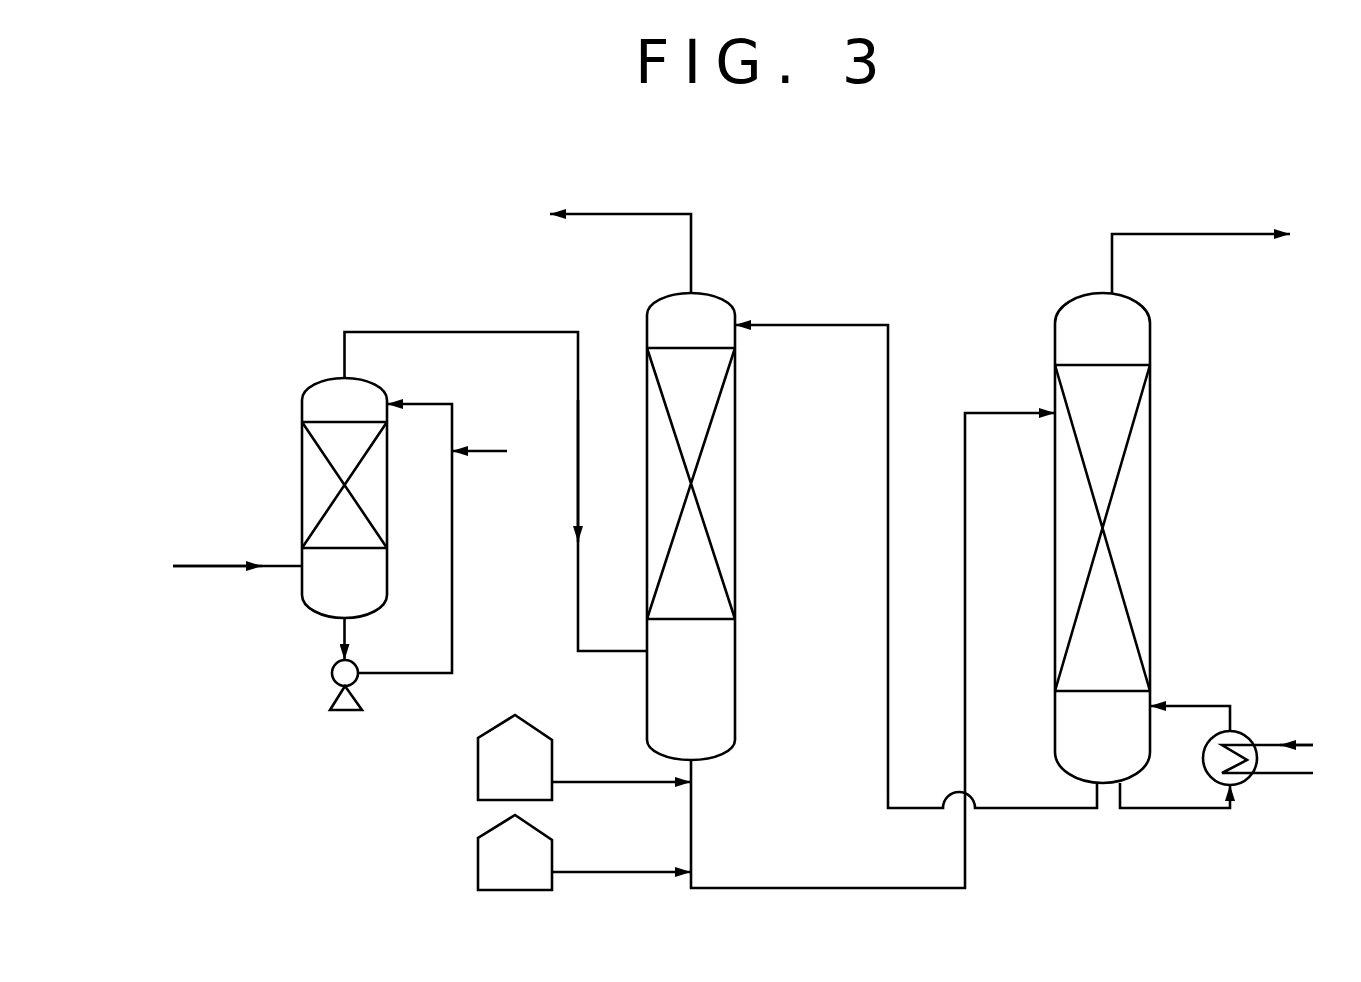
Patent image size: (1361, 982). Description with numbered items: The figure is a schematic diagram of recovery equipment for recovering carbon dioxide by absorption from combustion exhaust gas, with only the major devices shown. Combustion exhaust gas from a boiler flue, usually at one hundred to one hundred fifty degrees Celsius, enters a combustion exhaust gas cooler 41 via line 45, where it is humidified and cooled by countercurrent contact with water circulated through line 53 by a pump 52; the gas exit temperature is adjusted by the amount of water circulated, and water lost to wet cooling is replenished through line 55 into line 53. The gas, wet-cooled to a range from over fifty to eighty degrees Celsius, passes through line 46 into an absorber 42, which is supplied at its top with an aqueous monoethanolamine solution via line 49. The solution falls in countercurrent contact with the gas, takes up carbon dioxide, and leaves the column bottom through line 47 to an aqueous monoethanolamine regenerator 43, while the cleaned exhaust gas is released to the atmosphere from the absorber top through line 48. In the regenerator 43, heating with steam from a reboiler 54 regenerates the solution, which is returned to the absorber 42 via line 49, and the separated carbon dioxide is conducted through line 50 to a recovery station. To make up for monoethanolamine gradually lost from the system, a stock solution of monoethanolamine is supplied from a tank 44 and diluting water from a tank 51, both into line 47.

The combustion exhaust gas cooler 41 is at (300, 418).
The absorber 42 is at (736, 486).
The aqueous monoethanolamine regenerator 43 is at (1151, 355).
The tank 44 is at (547, 737).
The line 45 is at (190, 567).
The line 46 is at (463, 333).
The line 47 is at (818, 889).
The line 48 is at (636, 213).
The line 49 is at (889, 382).
The line 50 is at (1222, 233).
The tank 51 is at (548, 840).
The pump 52 is at (345, 711).
The line 53 is at (453, 602).
The reboiler 54 is at (1247, 735).
The line 55 is at (485, 452).